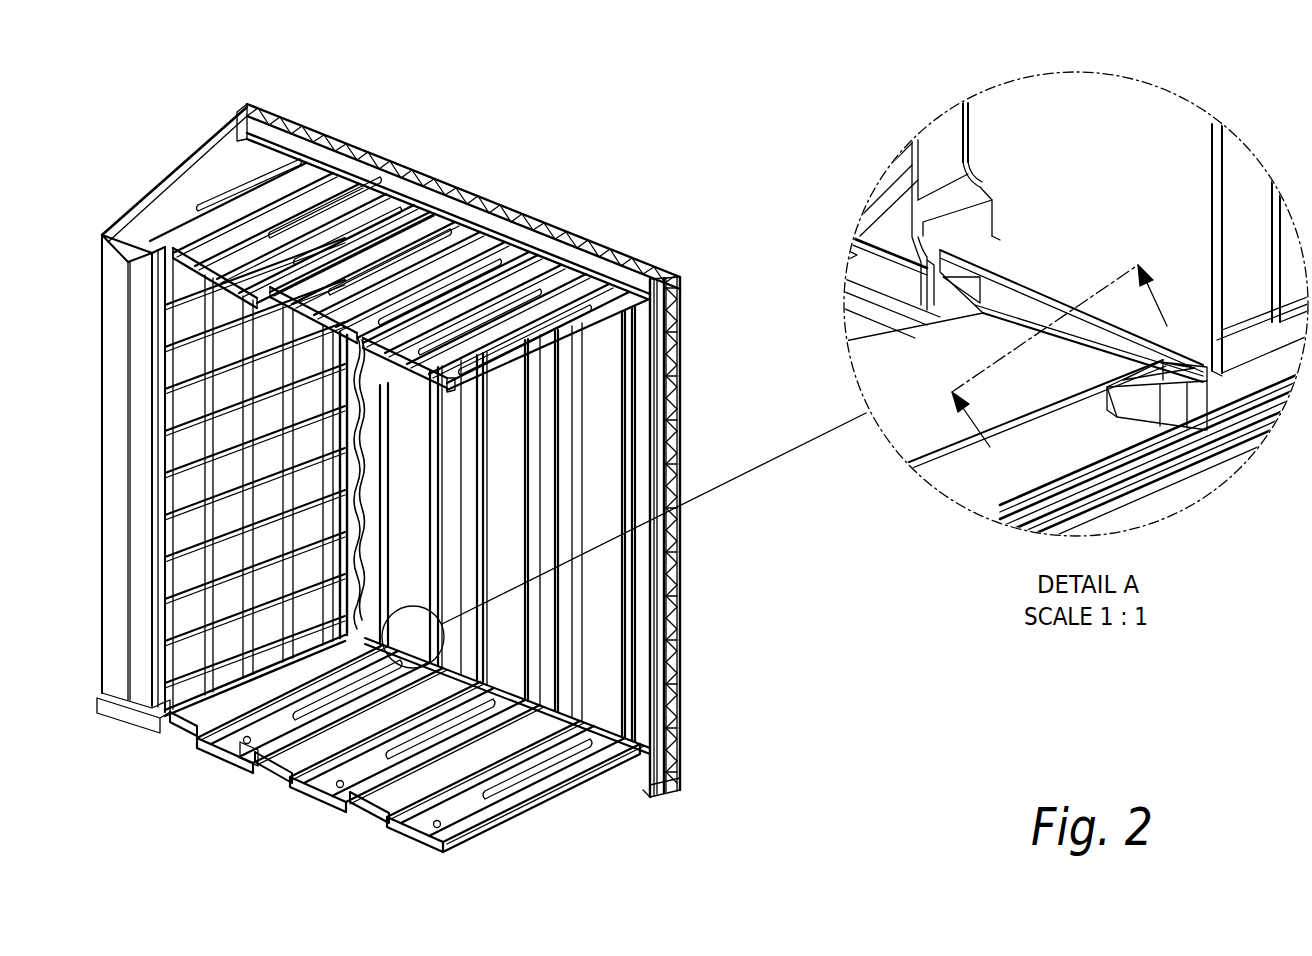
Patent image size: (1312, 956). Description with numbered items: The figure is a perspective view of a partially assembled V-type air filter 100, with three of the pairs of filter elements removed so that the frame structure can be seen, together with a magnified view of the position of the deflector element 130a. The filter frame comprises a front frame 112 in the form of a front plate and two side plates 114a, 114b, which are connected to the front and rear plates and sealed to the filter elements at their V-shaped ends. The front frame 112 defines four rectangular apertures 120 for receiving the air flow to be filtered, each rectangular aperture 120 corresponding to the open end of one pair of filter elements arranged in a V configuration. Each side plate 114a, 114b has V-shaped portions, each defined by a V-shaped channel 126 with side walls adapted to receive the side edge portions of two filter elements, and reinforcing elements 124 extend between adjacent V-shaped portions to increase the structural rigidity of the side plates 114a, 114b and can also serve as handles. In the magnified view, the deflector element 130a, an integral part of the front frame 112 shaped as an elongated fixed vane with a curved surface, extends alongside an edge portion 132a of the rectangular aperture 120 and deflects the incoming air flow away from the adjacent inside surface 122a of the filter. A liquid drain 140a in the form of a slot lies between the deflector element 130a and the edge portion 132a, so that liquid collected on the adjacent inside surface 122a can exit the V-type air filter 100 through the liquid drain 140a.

The V-type air filter 100 is at (202, 104).
The front frame 112 is at (425, 165).
The side plate 114a is at (508, 823).
The side plate 114b is at (180, 215).
The rectangular aperture 120 is at (1075, 85).
The adjacent inside surface 122a is at (905, 420).
The reinforcing element 124 is at (180, 730).
The V-shaped channel 126 is at (247, 767).
The deflector element 130a is at (987, 259).
The edge portion 132a is at (1021, 300).
The liquid drain 140a is at (1055, 304).